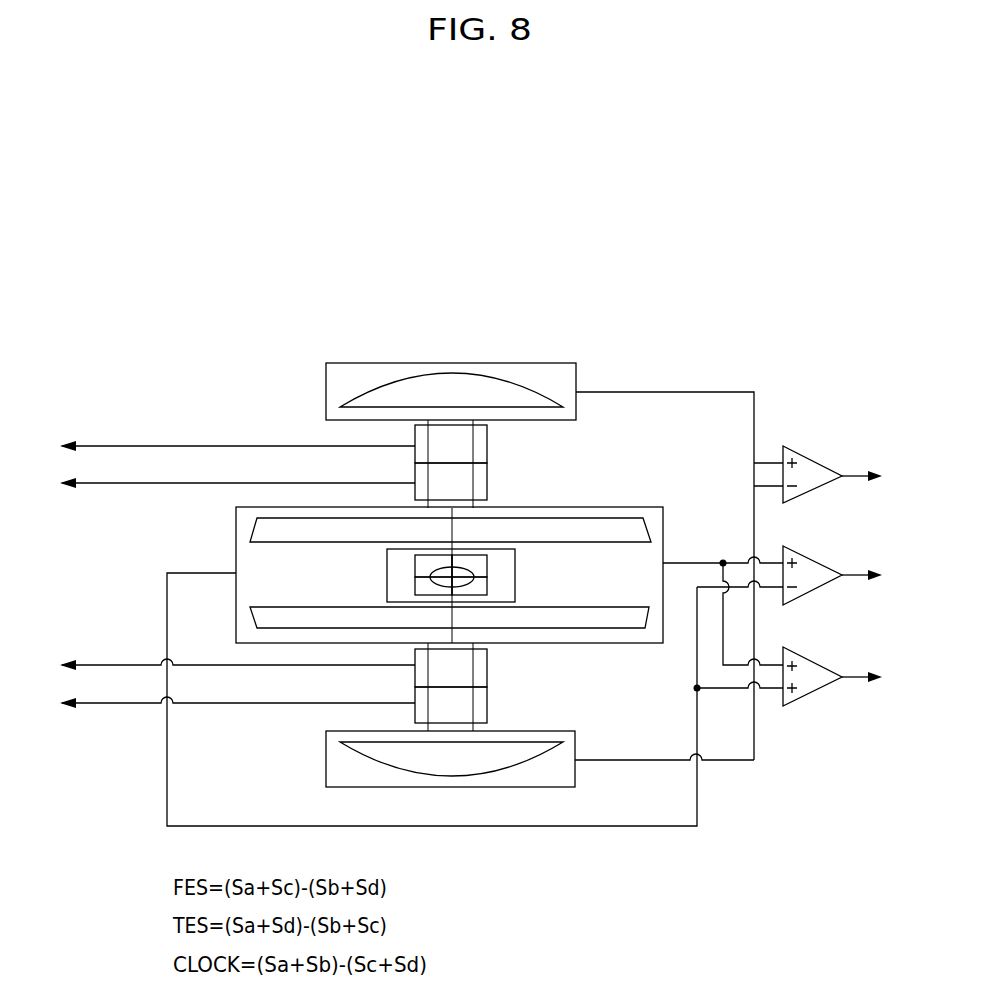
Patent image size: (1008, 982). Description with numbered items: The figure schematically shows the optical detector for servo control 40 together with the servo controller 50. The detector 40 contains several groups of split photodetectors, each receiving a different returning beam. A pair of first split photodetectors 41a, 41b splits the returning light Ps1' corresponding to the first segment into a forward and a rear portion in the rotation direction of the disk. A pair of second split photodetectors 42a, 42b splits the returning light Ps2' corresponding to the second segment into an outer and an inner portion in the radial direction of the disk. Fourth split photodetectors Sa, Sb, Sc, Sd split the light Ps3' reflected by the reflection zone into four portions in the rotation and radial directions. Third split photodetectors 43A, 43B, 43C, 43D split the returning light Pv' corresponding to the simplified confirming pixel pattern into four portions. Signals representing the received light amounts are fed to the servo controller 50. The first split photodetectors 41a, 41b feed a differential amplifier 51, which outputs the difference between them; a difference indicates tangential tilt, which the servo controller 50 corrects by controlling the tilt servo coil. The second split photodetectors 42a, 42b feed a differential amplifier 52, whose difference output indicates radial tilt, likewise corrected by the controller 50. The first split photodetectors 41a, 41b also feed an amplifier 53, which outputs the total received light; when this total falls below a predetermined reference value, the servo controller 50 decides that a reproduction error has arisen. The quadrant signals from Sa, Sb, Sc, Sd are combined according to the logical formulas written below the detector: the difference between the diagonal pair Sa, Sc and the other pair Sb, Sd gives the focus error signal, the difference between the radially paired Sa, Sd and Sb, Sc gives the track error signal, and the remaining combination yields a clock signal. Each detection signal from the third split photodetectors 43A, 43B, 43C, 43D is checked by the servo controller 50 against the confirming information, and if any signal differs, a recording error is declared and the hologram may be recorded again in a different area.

The optical detector for servo control 40 is at (472, 291).
The second split photodetector 42a is at (370, 362).
The second split photodetector 42b is at (428, 788).
The third split photodetector 43A is at (489, 448).
The third split photodetector 43B is at (489, 485).
The third split photodetector 43C is at (489, 667).
The third split photodetector 43D is at (489, 705).
The first split photodetector 41a is at (663, 517).
The first split photodetector 41b is at (236, 508).
The fourth split photodetector Sa is at (414, 558).
The fourth split photodetector Sb is at (414, 591).
The fourth split photodetector Sc is at (488, 592).
The fourth split photodetector Sd is at (488, 558).
The returning light corresponding to the first segment Ps1' is at (632, 537).
The returning light corresponding to the second segment Ps2' is at (557, 587).
The reflected light from the reflection zone Ps3' is at (303, 469).
The returning light corresponding to the simplified confirming pixel pattern Pv' is at (340, 559).
The servo controller 50 is at (817, 356).
The differential amplifier 51 is at (812, 558).
The differential amplifier 52 is at (812, 459).
The differential amplifier 53 is at (812, 661).